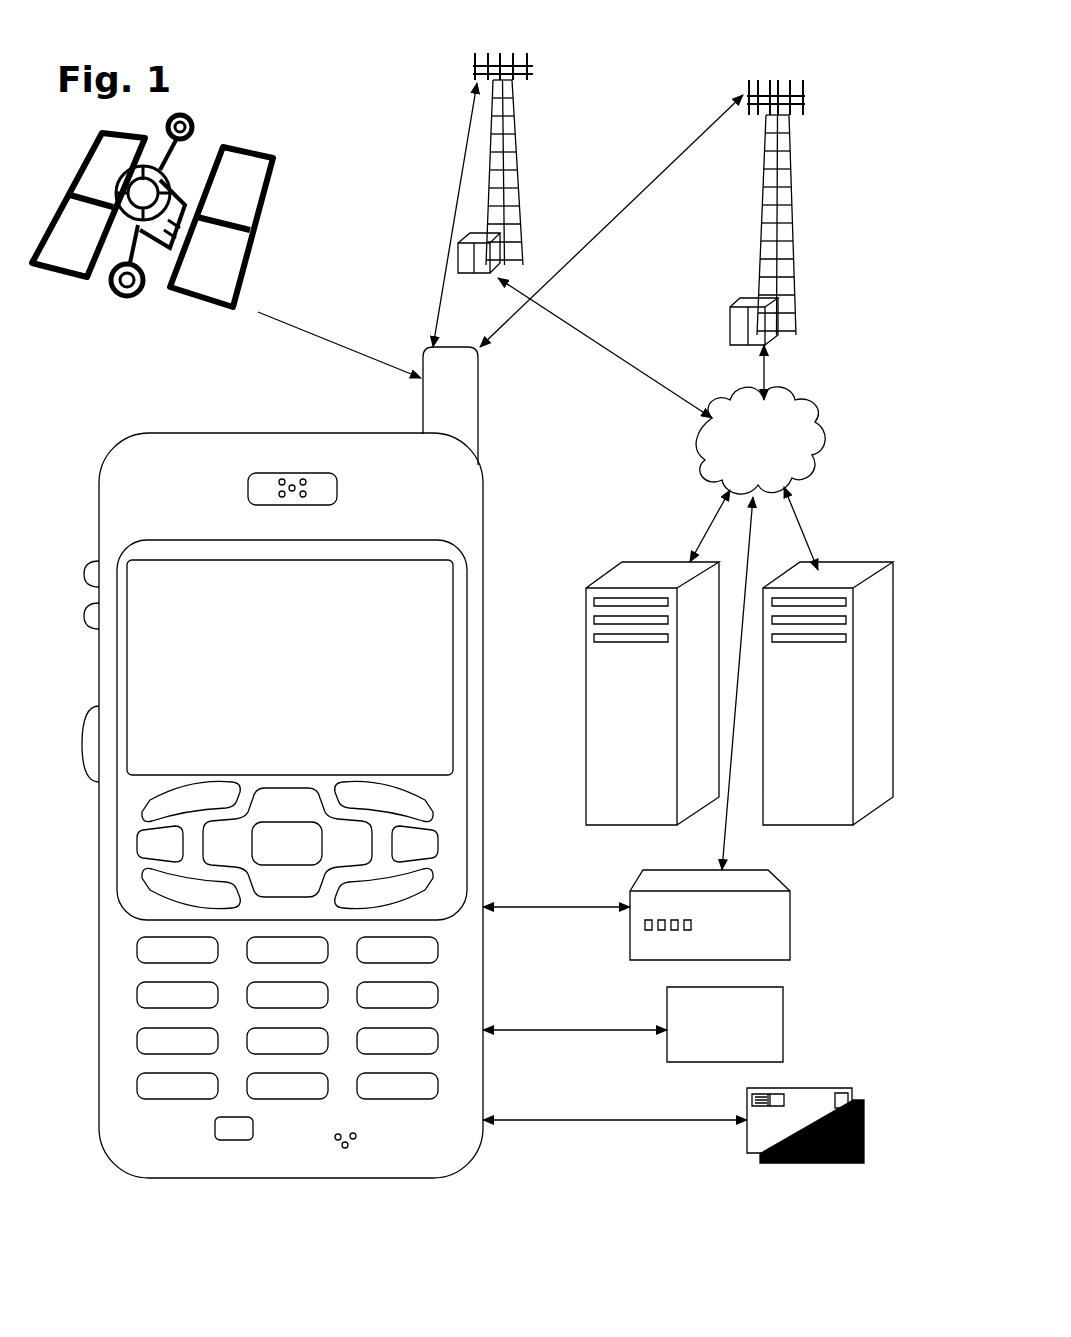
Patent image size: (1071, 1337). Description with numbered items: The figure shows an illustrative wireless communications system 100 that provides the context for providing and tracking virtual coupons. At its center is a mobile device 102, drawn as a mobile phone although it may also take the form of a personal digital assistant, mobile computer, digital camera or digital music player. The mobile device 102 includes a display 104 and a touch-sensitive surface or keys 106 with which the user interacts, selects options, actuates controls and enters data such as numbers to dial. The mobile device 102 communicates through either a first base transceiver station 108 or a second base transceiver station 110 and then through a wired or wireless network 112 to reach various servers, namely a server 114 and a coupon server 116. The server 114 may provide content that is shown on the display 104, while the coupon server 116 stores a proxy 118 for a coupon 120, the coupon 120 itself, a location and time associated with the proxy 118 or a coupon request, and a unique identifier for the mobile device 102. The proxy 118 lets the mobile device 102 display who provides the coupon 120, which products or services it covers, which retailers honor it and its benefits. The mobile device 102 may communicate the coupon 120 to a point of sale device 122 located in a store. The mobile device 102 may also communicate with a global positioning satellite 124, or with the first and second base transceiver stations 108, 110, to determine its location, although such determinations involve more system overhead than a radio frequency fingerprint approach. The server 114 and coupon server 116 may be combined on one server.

The wireless communications system 100 is at (597, 39).
The mobile device 102 is at (287, 776).
The display 104 is at (445, 528).
The keys 106 is at (234, 963).
The first base transceiver station 108 is at (488, 172).
The second base transceiver station 110 is at (760, 223).
The network 112 is at (718, 478).
The server 114 is at (612, 825).
The coupon server 116 is at (780, 825).
The proxy 118 is at (675, 1062).
The coupon 120 is at (757, 1155).
The point of sale device 122 is at (635, 960).
The global positioning satellite 124 is at (248, 272).